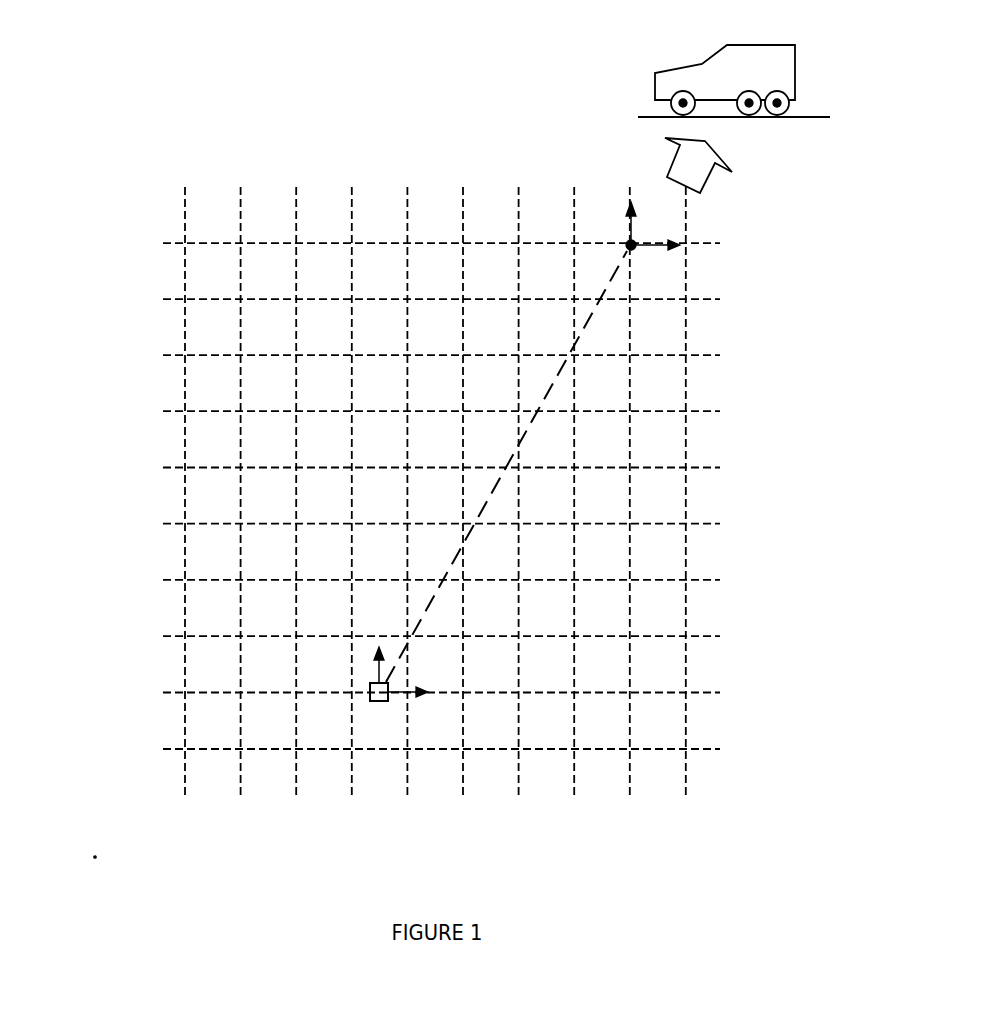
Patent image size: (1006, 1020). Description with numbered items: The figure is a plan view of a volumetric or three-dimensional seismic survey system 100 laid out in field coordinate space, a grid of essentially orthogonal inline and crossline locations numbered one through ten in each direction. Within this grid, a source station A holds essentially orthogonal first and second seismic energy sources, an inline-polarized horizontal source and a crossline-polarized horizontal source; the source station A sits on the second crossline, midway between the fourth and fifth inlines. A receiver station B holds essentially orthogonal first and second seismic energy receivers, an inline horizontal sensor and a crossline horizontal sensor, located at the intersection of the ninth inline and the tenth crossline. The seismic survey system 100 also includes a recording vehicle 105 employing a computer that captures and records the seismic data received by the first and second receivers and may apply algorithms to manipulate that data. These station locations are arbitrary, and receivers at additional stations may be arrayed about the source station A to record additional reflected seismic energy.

The seismic survey system 100 is at (925, 100).
The recording vehicle 105 is at (809, 88).
The source station A is at (394, 688).
The receiver station B is at (640, 236).